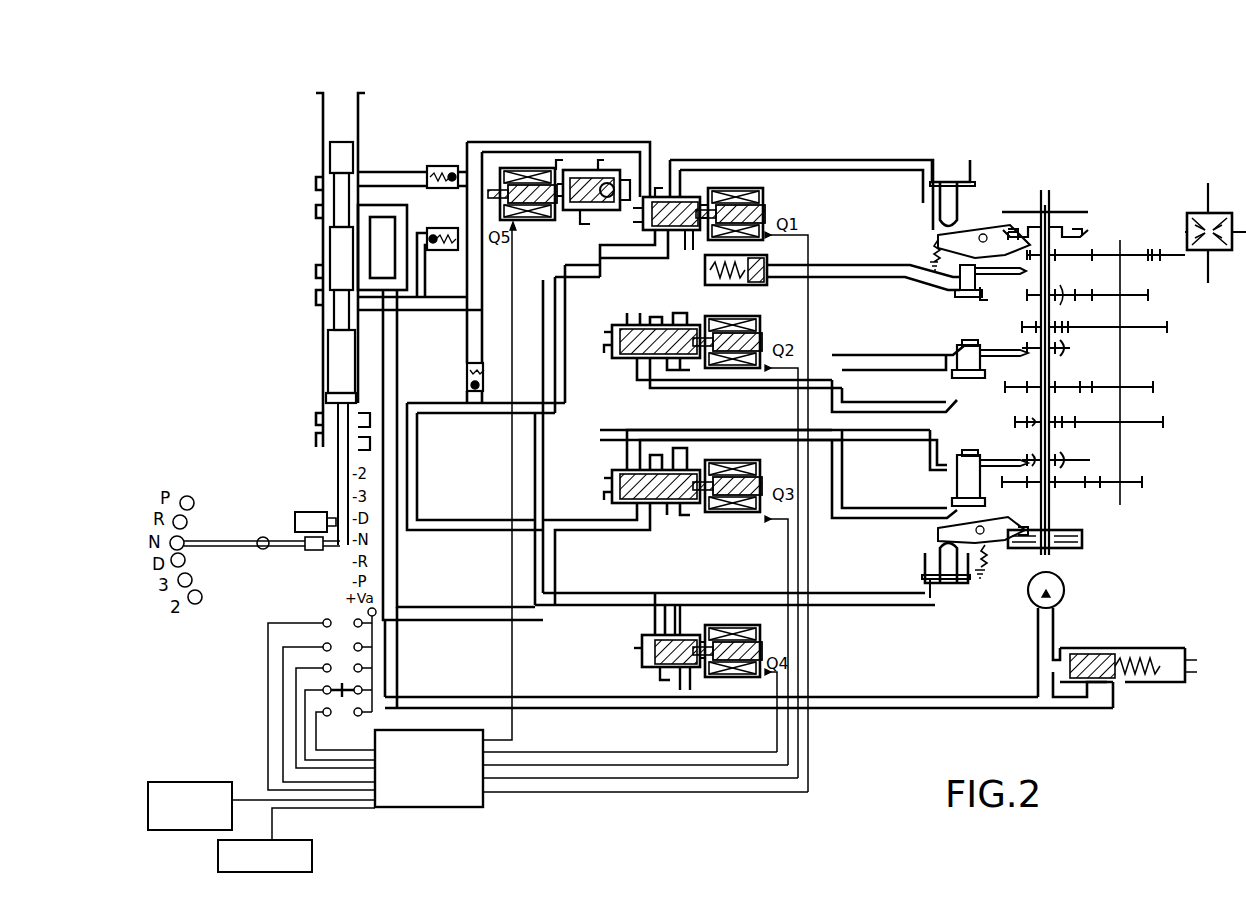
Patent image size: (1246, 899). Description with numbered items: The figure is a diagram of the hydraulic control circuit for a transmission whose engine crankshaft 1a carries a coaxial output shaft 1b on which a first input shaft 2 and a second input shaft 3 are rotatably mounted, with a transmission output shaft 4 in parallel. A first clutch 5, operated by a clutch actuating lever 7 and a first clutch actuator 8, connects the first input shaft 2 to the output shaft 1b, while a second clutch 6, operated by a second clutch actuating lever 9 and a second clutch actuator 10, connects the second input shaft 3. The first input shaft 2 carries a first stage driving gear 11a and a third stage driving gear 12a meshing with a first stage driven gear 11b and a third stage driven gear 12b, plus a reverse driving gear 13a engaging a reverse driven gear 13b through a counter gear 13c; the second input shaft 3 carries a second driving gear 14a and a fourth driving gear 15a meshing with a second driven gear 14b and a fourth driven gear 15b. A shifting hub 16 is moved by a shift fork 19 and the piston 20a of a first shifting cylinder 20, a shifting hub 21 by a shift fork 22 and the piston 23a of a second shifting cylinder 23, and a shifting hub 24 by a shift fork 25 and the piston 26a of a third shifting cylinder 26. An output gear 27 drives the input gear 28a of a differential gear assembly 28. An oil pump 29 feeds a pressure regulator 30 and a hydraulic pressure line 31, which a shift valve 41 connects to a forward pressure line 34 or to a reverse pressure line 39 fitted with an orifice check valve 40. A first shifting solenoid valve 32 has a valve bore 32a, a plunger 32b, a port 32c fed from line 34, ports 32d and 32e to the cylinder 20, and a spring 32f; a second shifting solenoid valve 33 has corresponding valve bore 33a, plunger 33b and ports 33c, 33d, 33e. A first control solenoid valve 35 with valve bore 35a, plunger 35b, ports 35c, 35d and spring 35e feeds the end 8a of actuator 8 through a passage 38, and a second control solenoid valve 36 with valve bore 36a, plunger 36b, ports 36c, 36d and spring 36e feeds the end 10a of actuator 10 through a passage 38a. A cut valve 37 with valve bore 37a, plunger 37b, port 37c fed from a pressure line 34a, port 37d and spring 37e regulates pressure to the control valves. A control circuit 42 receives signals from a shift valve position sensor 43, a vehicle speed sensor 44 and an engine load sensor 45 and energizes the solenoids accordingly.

The crankshaft 1a is at (1052, 212).
The output shaft 1b is at (1048, 420).
The first input shaft 2 is at (1049, 324).
The second input shaft 3 is at (1050, 462).
The transmission output shaft 4 is at (1122, 449).
The first clutch 5 is at (1078, 228).
The second clutch 6 is at (1082, 538).
The clutch actuating lever 7 is at (961, 226).
The first clutch actuator 8 is at (965, 173).
The end of first actuator 8a is at (932, 170).
The second clutch actuating lever 9 is at (998, 530).
The second clutch actuator 10 is at (951, 584).
The end of second actuator 10a is at (933, 600).
The first stage driving gear 11a is at (1070, 326).
The first stage driven gear 11b is at (1145, 327).
The third stage driving gear 12a is at (1075, 386).
The third stage driven gear 12b is at (1132, 387).
The reverse driving gear 13a is at (1090, 254).
The reverse driven gear 13b is at (1136, 294).
The counter gear 13c is at (1078, 292).
The second driving gear 14a is at (1075, 420).
The second driven gear 14b is at (1140, 422).
The fourth driving gear 15a is at (1080, 482).
The fourth driven gear 15b is at (1130, 482).
The shifting hub 16 is at (1068, 350).
The shift fork 19 is at (1003, 348).
The first shifting cylinder 20 is at (930, 368).
The piston 20a is at (958, 348).
The shifting hub 21 is at (1068, 458).
The shift fork 22 is at (1003, 458).
The second shifting cylinder 23 is at (814, 472).
The piston 23a is at (962, 462).
The shifting hub 24 is at (1056, 266).
The shift fork 25 is at (930, 248).
The third shifting cylinder 26 is at (969, 292).
The piston 26a is at (980, 298).
The output gear 27 is at (1140, 252).
The differential gear assembly 28 is at (1198, 227).
The input gear 28a is at (1205, 250).
The oil pump 29 is at (1065, 588).
The pressure regulator 30 is at (1120, 647).
The hydraulic pressure line 31 is at (965, 710).
The first shifting solenoid valve 32 is at (704, 351).
The valve bore 32a is at (625, 318).
The plunger 32b is at (610, 337).
The port 32c is at (690, 313).
The port 32d is at (674, 372).
The port 32e is at (640, 380).
The spring 32f is at (608, 355).
The second shifting solenoid valve 33 is at (736, 513).
The valve bore 33a is at (690, 505).
The plunger 33b is at (610, 498).
The port 33c is at (660, 506).
The port 33d is at (610, 480).
The port 33e is at (632, 462).
The forward pressure line 34 is at (412, 336).
The pressure line 34a is at (478, 262).
The first control solenoid valve 35 is at (680, 212).
The valve bore 35a is at (700, 200).
The plunger 35b is at (640, 222).
The port 35c is at (652, 252).
The port 35d is at (678, 170).
The spring 35e is at (662, 183).
The second control solenoid valve 36 is at (666, 626).
The valve bore 36a is at (716, 636).
The plunger 36b is at (655, 668).
The port 36c is at (660, 600).
The port 36d is at (680, 615).
The spring 36e is at (636, 650).
The cut valve 37 is at (569, 174).
The valve bore 37a is at (610, 180).
The plunger 37b is at (558, 168).
The port 37c is at (603, 168).
The port 37d is at (580, 222).
The spring 37e is at (628, 182).
The passage 38 is at (818, 158).
The passage 38a is at (847, 592).
The reverse pressure line 39 is at (556, 280).
The orifice check valve 40 is at (762, 256).
The shift valve 41 is at (326, 296).
The control circuit 42 is at (424, 808).
The shift valve position sensor 43 is at (262, 656).
The vehicle speed sensor 44 is at (204, 772).
The engine load sensor 45 is at (312, 846).